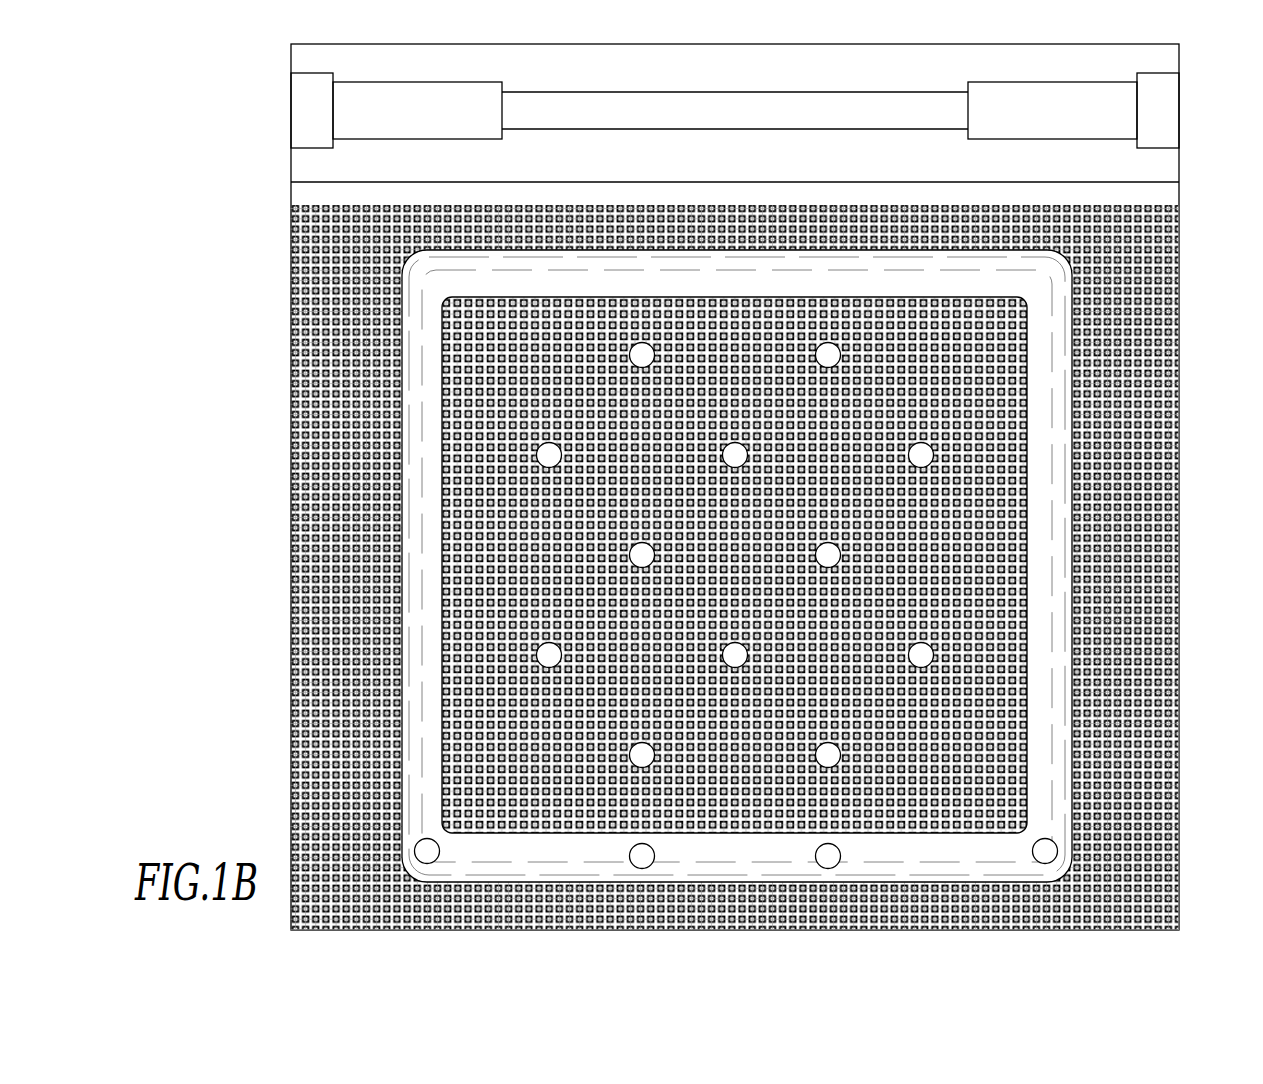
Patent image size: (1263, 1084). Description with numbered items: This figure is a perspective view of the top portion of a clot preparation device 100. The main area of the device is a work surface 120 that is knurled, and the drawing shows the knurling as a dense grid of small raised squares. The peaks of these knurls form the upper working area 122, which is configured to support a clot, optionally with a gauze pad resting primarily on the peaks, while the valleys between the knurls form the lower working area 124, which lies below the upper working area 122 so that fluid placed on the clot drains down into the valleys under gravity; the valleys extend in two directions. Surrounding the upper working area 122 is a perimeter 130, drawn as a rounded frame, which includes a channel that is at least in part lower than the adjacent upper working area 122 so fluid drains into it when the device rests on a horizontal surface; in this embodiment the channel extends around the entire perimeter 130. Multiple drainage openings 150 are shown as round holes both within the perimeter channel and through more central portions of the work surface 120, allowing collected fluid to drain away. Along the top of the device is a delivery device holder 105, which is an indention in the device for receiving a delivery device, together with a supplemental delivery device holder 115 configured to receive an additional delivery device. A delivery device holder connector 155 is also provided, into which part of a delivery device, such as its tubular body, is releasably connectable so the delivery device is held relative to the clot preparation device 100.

The clot preparation device 100 is at (241, 101).
The delivery device holder 105 is at (685, 115).
The supplemental delivery device holder 115 is at (301, 184).
The work surface 120 is at (640, 318).
The upper working area 122 is at (931, 800).
The lower working area 124 is at (1000, 687).
The perimeter 130 is at (1057, 415).
The drainage openings 150 is at (585, 846).
The delivery device holder connector 155 is at (987, 93).